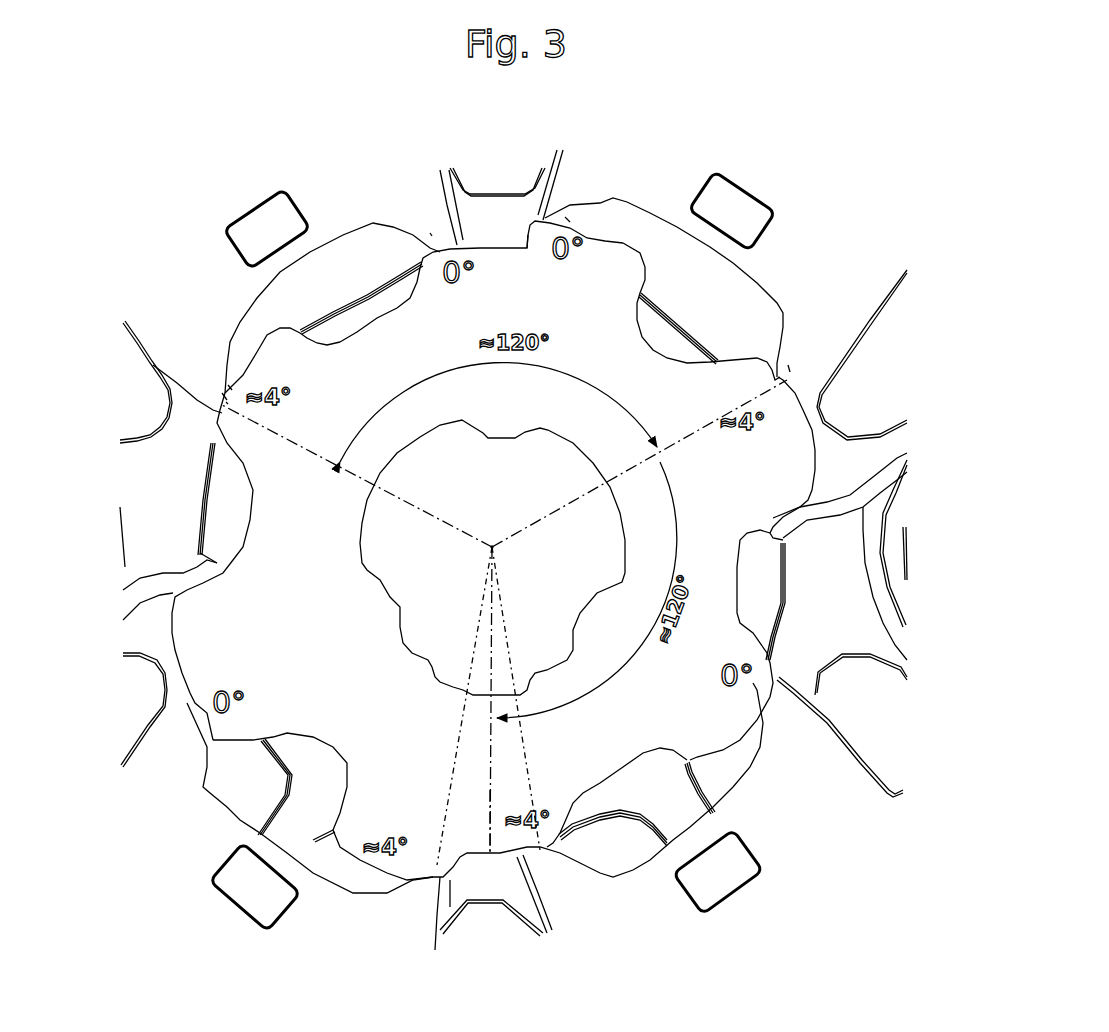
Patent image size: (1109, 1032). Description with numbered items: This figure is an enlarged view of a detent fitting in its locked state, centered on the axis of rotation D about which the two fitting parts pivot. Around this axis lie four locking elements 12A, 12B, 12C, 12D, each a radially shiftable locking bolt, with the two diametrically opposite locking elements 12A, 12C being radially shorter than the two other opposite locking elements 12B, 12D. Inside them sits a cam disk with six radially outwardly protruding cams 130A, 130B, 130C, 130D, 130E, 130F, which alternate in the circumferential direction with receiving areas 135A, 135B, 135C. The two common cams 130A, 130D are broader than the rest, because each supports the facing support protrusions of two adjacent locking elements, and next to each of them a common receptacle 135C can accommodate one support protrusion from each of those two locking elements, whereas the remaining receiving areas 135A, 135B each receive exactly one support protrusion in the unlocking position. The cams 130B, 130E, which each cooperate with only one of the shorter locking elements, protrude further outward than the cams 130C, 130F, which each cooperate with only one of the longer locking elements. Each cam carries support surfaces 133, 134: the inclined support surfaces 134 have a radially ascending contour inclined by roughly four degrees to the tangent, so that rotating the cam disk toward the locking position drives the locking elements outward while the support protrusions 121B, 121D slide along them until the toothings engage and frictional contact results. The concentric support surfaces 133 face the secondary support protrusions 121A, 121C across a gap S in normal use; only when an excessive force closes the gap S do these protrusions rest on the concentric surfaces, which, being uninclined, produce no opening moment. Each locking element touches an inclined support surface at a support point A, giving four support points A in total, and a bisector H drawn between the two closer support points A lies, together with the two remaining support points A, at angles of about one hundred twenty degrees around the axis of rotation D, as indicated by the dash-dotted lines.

The locking element 12A is at (793, 243).
The locking element 12B is at (822, 787).
The locking element 12C is at (190, 807).
The locking element 12D is at (330, 215).
The support protrusion 121A is at (565, 217).
The support protrusion 121B is at (785, 370).
The support protrusion 121C is at (430, 233).
The support protrusion 121D is at (225, 395).
The common cam 130A is at (624, 238).
The cam 130B is at (812, 427).
The cam 130C is at (731, 742).
The common cam 130D is at (352, 862).
The cam 130E is at (168, 628).
The cam 130F is at (261, 337).
The concentric support surface 133 is at (455, 245).
The inclined support surface 134 is at (228, 385).
The receiving area 135A is at (673, 307).
The receiving area 135B is at (195, 500).
The common receptacle 135C is at (333, 327).
The support point A is at (221, 403).
The gap S is at (526, 218).
The axis of rotation D is at (493, 545).
The bisector H is at (488, 800).